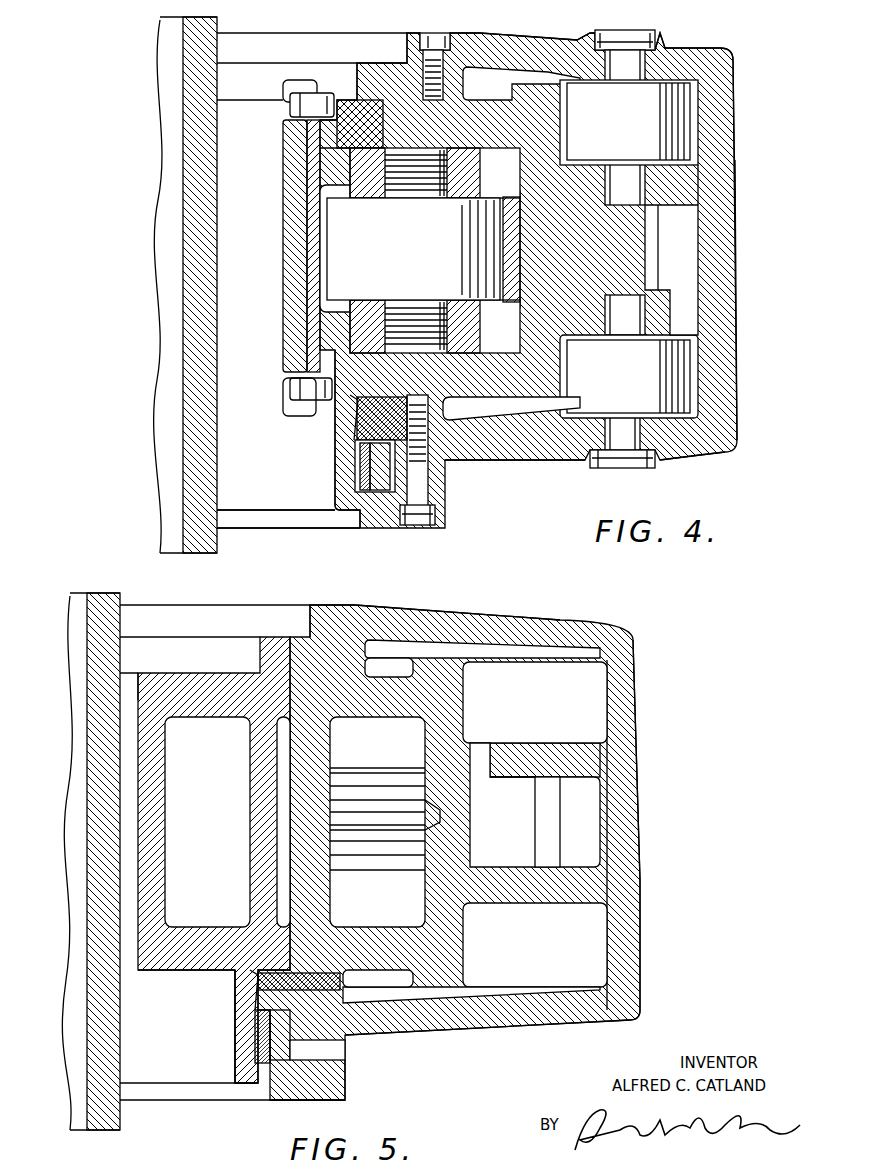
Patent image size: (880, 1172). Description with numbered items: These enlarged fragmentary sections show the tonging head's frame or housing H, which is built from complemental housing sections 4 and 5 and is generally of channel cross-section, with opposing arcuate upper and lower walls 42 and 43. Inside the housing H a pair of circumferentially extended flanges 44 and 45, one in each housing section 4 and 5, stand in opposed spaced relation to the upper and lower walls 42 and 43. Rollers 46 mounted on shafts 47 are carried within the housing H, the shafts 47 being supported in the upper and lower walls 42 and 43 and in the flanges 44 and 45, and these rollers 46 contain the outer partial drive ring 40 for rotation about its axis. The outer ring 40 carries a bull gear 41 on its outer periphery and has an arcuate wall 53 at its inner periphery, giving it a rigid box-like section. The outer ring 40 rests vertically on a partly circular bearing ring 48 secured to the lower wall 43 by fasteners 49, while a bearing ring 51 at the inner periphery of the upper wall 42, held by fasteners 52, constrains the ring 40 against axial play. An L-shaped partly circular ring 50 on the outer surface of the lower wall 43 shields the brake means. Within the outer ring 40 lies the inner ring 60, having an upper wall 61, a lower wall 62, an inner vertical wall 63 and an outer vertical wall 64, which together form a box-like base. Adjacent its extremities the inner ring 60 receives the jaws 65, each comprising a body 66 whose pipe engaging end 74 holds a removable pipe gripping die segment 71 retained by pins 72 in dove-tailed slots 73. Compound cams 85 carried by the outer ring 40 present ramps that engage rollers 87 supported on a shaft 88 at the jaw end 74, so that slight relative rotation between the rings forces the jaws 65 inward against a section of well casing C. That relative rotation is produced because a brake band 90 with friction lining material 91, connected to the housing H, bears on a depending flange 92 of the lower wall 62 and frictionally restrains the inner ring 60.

In FIG. 4, the housing section 4 is at (734, 84).
In FIG. 5, the housing section 5 is at (634, 929).
In FIG. 4, the housing H is at (733, 123).
In FIG. 5, the housing H is at (640, 682).
In FIG. 4, the well casing C is at (190, 526).
In FIG. 5, the well casing C is at (108, 1119).
In FIG. 4, the outer partial drive ring 40 is at (490, 398).
In FIG. 5, the outer partial drive ring 40 is at (465, 699).
In FIG. 4, the bull gear 41 is at (648, 230).
In FIG. 5, the bull gear 41 is at (560, 797).
In FIG. 4, the upper wall 42 is at (483, 40).
In FIG. 5, the upper wall 42 is at (435, 620).
In FIG. 4, the lower wall 43 is at (556, 440).
In FIG. 5, the lower wall 43 is at (420, 1022).
In FIG. 4, the circumferentially extended flange 44 is at (682, 182).
In FIG. 5, the circumferentially extended flange 44 is at (527, 745).
In FIG. 5, the circumferentially extended flange 45 is at (543, 887).
In FIG. 4, the roller 46 is at (629, 249).
In FIG. 4, the shaft 47 is at (640, 55).
In FIG. 4, the bearing ring 48 is at (362, 413).
In FIG. 5, the bearing ring 48 is at (262, 985).
In FIG. 4, the fastener 49 is at (419, 514).
In FIG. 4, the L-shaped partly circular ring 50 is at (380, 495).
In FIG. 5, the L-shaped partly circular ring 50 is at (293, 1075).
In FIG. 4, the bearing ring 51 is at (465, 84).
In FIG. 5, the bearing ring 51 is at (343, 658).
In FIG. 4, the fastener 52 is at (431, 38).
In FIG. 5, the arcuate wall 53 is at (295, 825).
In FIG. 4, the inner ring 60 is at (312, 508).
In FIG. 5, the inner ring 60 is at (205, 675).
In FIG. 5, the upper wall 61 is at (150, 678).
In FIG. 5, the lower wall 62 is at (157, 957).
In FIG. 5, the inner vertical wall 63 is at (145, 750).
In FIG. 5, the outer vertical wall 64 is at (255, 877).
In FIG. 4, the jaw 65 is at (283, 405).
In FIG. 4, the body 66 is at (328, 170).
In FIG. 4, the pipe gripping die segment 71 is at (302, 288).
In FIG. 4, the pin 72 is at (300, 109).
In FIG. 4, the slot 73 is at (300, 80).
In FIG. 4, the pipe engaging end 74 is at (302, 236).
In FIG. 4, the compound cam 85 is at (510, 196).
In FIG. 4, the roller 87 is at (413, 249).
In FIG. 4, the shaft 88 is at (390, 322).
In FIG. 4, the brake band 90 is at (380, 468).
In FIG. 5, the brake band 90 is at (345, 1060).
In FIG. 4, the friction lining material 91 is at (360, 470).
In FIG. 5, the friction lining material 91 is at (265, 1058).
In FIG. 4, the depending flange 92 is at (342, 500).
In FIG. 5, the depending flange 92 is at (243, 1053).